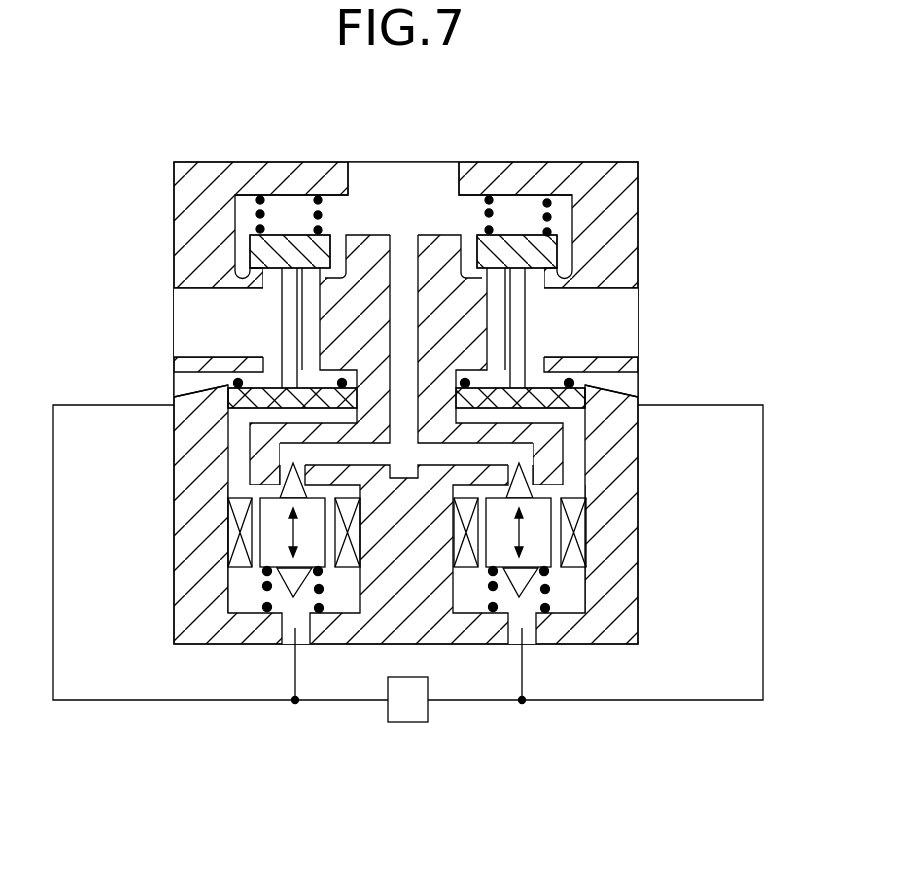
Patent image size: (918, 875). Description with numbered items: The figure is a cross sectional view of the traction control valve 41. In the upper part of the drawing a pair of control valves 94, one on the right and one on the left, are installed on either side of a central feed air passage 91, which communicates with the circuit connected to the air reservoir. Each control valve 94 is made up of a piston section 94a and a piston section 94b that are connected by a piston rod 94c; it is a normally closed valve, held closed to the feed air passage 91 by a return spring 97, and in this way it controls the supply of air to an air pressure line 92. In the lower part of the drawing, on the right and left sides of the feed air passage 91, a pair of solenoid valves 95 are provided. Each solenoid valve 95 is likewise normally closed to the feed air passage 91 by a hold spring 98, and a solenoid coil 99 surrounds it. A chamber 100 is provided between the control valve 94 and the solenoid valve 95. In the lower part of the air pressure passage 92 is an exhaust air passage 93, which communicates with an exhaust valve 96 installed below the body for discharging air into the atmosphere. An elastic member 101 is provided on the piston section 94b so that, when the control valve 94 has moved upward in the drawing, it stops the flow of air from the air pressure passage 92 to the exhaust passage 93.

The traction control valve 41 is at (666, 205).
The feed air passage 91 is at (400, 180).
The air pressure line 92 is at (240, 332).
The exhaust air passage 93 is at (226, 398).
The control valve 94 is at (431, 351).
The piston section 94a is at (262, 255).
The piston section 94b is at (255, 404).
The piston rod 94c is at (282, 327).
The solenoid valve 95 is at (262, 568).
The exhaust valve 96 is at (412, 710).
The return spring 97 is at (253, 213).
The hold spring 98 is at (263, 590).
The solenoid coil 99 is at (230, 533).
The chamber 100 is at (262, 486).
The elastic member 101 is at (233, 382).